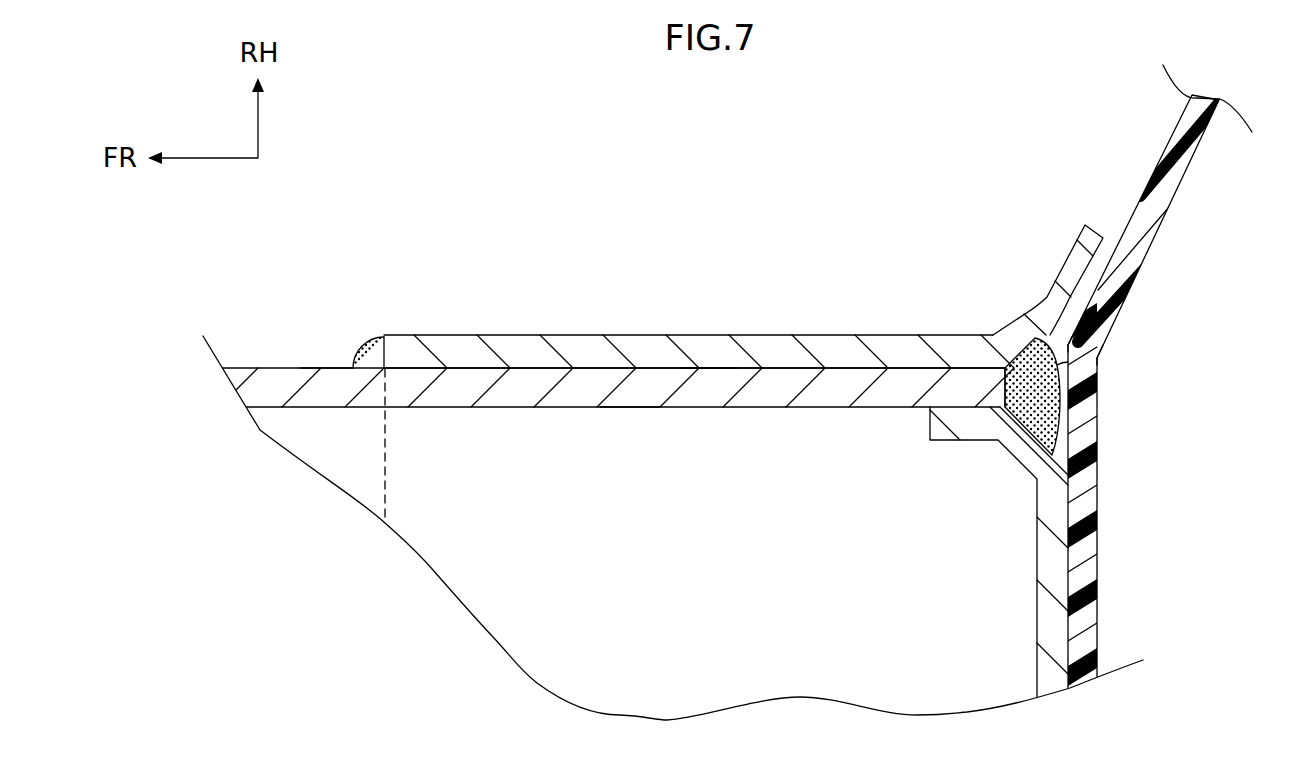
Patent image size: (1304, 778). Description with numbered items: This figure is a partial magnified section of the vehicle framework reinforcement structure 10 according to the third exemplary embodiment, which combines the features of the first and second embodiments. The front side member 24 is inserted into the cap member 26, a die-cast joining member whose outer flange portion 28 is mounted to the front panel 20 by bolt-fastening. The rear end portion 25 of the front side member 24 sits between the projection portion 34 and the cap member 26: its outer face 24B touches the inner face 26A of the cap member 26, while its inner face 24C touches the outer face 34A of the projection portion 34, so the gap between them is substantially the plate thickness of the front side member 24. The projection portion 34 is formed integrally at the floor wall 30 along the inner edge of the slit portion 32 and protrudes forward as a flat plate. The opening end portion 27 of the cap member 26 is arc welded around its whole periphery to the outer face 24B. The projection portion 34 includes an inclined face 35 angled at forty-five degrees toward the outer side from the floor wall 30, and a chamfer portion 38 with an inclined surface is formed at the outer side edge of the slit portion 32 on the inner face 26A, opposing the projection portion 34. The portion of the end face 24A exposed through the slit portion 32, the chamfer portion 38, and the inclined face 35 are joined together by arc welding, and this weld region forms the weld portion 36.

The vehicle framework reinforcement structure 10 is at (984, 482).
The front panel 20 is at (1187, 165).
The front side member 24 is at (265, 358).
The end face 24A is at (990, 334).
The outer face 24B is at (335, 362).
The inner face 24C is at (632, 409).
The rear end portion 25 is at (712, 396).
The cap member 26 is at (578, 326).
The inner face 26A is at (775, 385).
The opening end portion 27 is at (368, 343).
The outer flange portion 28 is at (1094, 232).
The floor wall 30 is at (1050, 636).
The slit portion 32 is at (1087, 333).
The projection portion 34 is at (933, 442).
The outer face 34A is at (1003, 366).
The inclined face 35 is at (1078, 455).
The weld portion 36 is at (1052, 412).
The chamfer portion 38 is at (1060, 372).